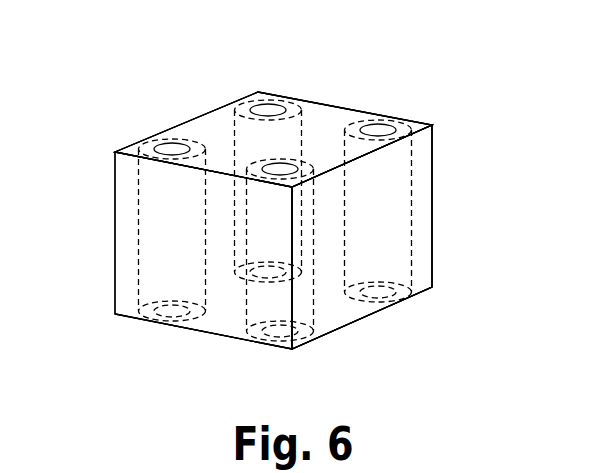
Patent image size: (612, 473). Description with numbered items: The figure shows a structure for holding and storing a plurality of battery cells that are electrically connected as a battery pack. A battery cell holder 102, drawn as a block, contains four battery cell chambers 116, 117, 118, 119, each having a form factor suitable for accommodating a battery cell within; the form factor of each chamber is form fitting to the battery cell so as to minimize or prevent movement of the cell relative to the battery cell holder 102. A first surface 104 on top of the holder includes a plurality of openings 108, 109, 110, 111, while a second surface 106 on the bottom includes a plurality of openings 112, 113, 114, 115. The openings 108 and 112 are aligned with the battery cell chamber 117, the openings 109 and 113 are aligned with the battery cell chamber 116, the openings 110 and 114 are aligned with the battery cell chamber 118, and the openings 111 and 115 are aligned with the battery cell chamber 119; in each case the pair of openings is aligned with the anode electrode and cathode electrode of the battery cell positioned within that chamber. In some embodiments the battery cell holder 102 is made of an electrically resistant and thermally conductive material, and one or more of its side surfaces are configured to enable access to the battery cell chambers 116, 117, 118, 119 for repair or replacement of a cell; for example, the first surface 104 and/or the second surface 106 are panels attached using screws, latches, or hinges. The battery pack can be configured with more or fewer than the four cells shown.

The battery cell holder 102 is at (434, 143).
The first surface 104 is at (343, 113).
The second surface 106 is at (358, 310).
The opening 108 is at (268, 110).
The opening 109 is at (172, 149).
The opening 110 is at (280, 168).
The opening 111 is at (378, 130).
The opening 112 is at (268, 272).
The opening 113 is at (172, 313).
The opening 114 is at (280, 333).
The opening 115 is at (380, 292).
The battery cell chamber 116 is at (155, 202).
The battery cell chamber 117 is at (235, 150).
The battery cell chamber 118 is at (317, 303).
The battery cell chamber 119 is at (387, 207).